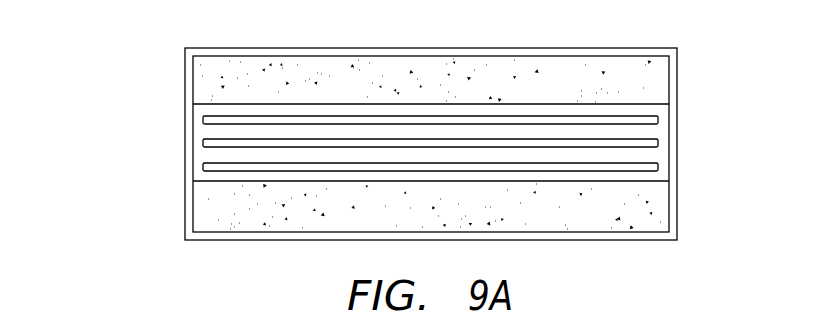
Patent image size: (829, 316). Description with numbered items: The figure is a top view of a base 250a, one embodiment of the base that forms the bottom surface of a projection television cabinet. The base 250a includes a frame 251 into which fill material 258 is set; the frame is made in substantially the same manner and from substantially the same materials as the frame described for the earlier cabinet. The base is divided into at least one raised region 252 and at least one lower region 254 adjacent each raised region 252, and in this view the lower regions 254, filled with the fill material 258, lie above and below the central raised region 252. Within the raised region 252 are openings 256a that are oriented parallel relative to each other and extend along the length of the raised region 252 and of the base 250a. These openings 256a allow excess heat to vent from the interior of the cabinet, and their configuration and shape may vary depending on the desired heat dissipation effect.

The base 250a is at (155, 50).
The frame 251 is at (595, 240).
The raised region 252 is at (677, 140).
The lower region 254 is at (677, 79).
The openings 256a is at (203, 118).
The fill material 258 is at (218, 83).